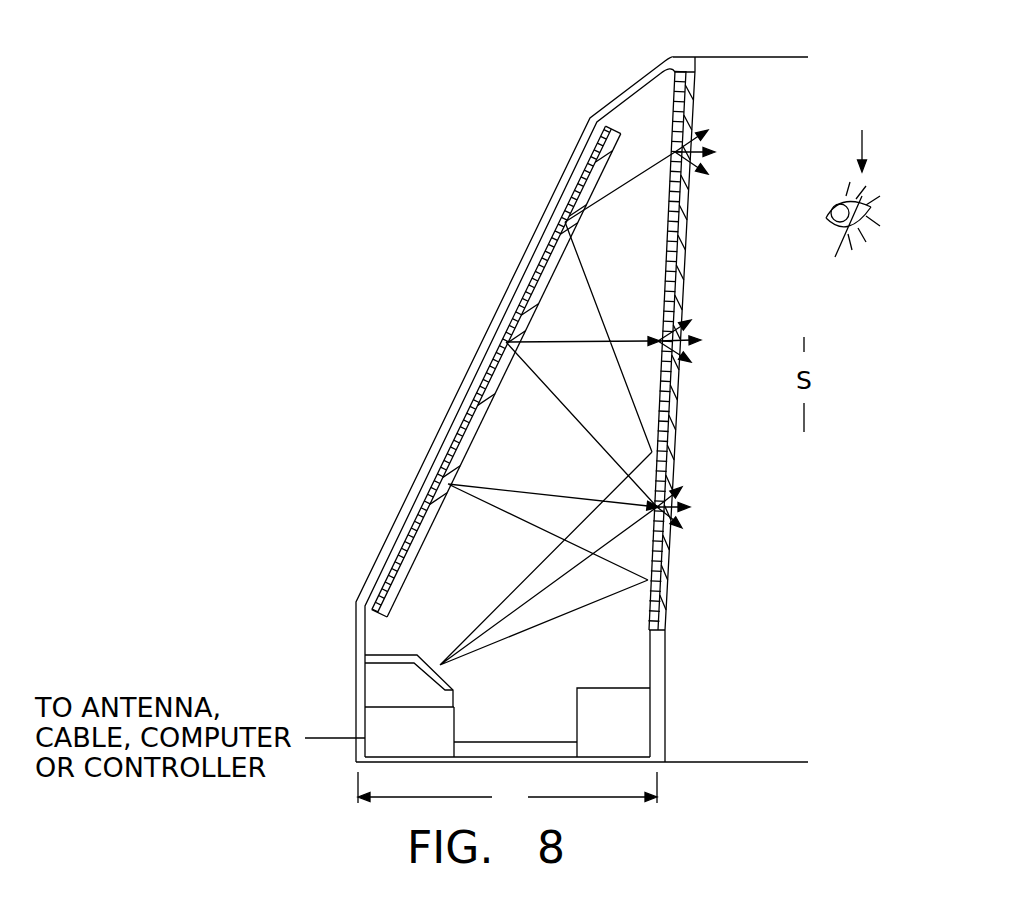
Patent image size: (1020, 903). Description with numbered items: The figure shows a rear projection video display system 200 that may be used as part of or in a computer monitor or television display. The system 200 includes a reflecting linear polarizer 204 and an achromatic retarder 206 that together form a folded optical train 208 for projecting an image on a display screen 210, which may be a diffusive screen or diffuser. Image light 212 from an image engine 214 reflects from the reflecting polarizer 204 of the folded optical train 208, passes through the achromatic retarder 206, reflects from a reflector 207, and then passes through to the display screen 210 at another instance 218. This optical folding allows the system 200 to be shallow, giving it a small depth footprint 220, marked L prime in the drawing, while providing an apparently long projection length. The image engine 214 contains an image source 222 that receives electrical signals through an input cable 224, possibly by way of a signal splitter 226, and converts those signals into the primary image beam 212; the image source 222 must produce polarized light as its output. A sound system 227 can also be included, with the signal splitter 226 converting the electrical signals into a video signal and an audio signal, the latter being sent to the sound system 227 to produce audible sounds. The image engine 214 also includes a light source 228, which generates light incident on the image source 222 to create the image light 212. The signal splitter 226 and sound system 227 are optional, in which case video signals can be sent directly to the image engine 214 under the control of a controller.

The rear projection video display system 200 is at (434, 222).
The reflecting linear polarizer 204 is at (675, 138).
The achromatic retarder 206 is at (603, 172).
The reflector 207 is at (441, 447).
The folded optical train 208 is at (618, 68).
The display screen 210 is at (698, 63).
The image light 212 is at (541, 430).
The image engine 214 is at (376, 699).
The instance of passing to display screen 218 is at (692, 172).
The depth footprint 220 is at (400, 798).
The image source 222 is at (431, 661).
The input cable 224 is at (336, 737).
The signal splitter 226 is at (476, 732).
The sound system 227 is at (582, 731).
The light source 228 is at (388, 657).